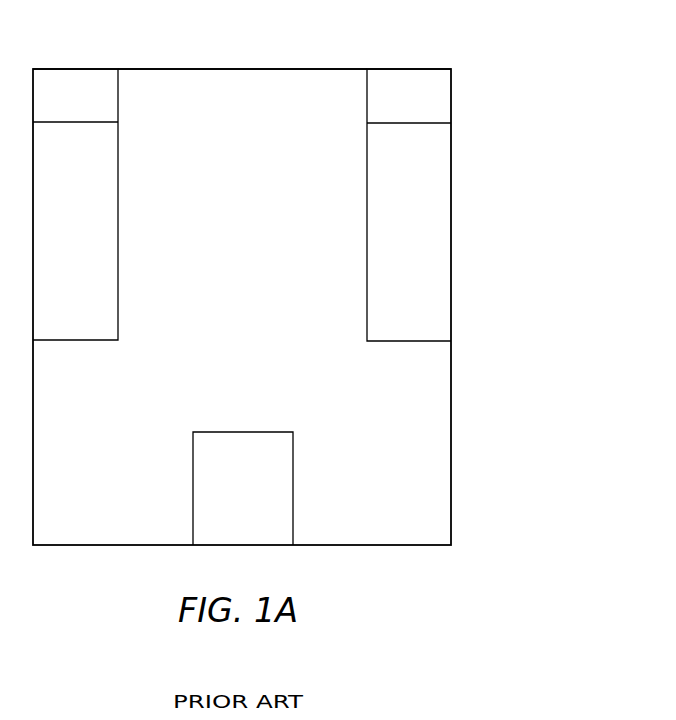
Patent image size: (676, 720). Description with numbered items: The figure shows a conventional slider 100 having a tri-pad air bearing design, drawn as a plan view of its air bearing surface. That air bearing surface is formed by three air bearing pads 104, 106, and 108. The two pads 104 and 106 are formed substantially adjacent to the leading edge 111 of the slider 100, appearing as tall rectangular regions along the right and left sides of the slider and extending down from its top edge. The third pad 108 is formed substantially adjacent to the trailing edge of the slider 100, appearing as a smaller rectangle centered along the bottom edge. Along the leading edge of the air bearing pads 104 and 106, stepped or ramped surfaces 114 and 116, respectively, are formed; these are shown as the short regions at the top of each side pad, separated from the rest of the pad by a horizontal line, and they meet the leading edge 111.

The slider 100 is at (548, 84).
The air bearing pad 104 is at (423, 229).
The air bearing pad 106 is at (91, 229).
The air bearing pad 108 is at (260, 500).
The leading edge 111 is at (281, 68).
The stepped or ramped surface 114 is at (417, 68).
The stepped or ramped surface 116 is at (77, 68).